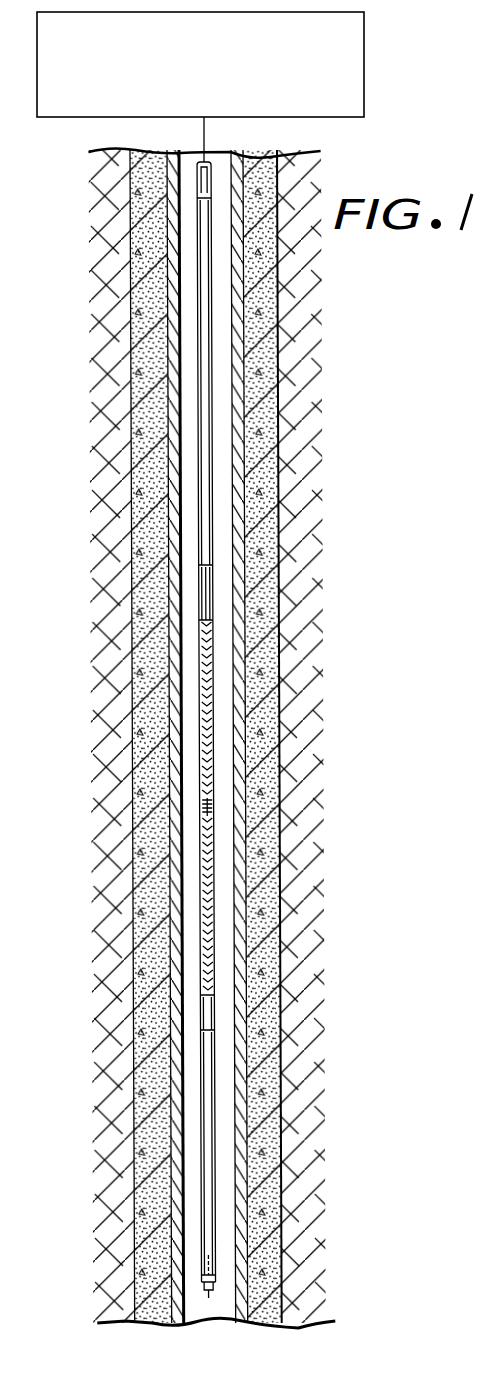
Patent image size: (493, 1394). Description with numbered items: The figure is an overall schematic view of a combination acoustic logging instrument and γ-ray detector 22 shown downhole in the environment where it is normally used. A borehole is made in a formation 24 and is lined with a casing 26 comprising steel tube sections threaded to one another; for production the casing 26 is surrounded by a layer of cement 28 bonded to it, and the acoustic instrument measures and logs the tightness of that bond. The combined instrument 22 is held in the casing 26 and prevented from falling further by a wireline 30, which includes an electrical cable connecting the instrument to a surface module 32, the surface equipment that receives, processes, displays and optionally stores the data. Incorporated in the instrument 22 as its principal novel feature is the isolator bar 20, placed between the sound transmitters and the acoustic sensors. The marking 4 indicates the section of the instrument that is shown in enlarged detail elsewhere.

The surface module 32 is at (366, 82).
The wireline 30 is at (206, 130).
The formation 24 is at (288, 258).
The casing 26 is at (235, 297).
The cement 28 is at (262, 350).
The combination acoustic logging instrument and γ-ray detector 22 is at (287, 730).
The isolator bar 20 is at (210, 730).
The section line for FIG. 4 is at (196, 176).